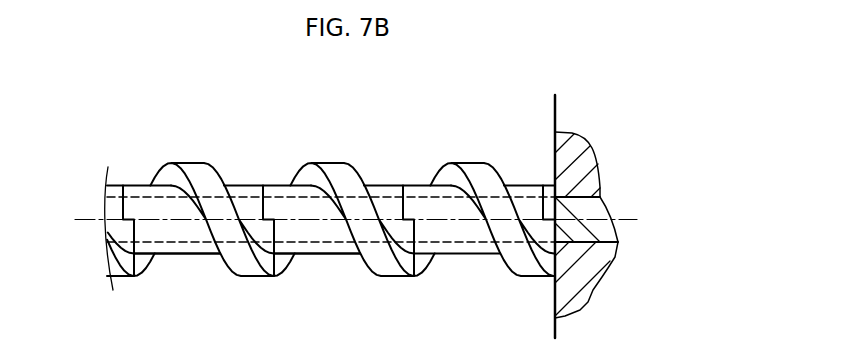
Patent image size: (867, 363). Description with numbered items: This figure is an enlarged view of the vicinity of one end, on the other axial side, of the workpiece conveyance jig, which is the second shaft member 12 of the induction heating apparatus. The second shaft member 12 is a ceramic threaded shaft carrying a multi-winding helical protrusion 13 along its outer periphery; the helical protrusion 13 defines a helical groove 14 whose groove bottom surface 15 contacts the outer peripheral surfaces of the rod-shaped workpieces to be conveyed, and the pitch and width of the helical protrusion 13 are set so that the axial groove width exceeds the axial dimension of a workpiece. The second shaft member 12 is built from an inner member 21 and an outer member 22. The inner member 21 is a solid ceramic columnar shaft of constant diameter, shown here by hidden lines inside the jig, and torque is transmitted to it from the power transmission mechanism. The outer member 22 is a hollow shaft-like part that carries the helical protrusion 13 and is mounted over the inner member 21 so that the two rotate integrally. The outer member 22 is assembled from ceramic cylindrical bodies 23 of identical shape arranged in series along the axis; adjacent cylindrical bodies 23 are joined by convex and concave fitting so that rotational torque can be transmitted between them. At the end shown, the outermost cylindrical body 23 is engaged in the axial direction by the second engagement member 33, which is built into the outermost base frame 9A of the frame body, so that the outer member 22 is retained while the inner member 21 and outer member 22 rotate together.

The base frame 9A is at (614, 116).
The second shaft member 12 is at (331, 231).
The helical protrusion 13 is at (183, 153).
The helical groove 14 is at (180, 263).
The groove bottom surface 15 is at (342, 254).
The inner member 21 is at (308, 228).
The outer member 22 is at (349, 142).
The cylindrical body 23 is at (232, 173).
The second engagement member 33 is at (563, 297).